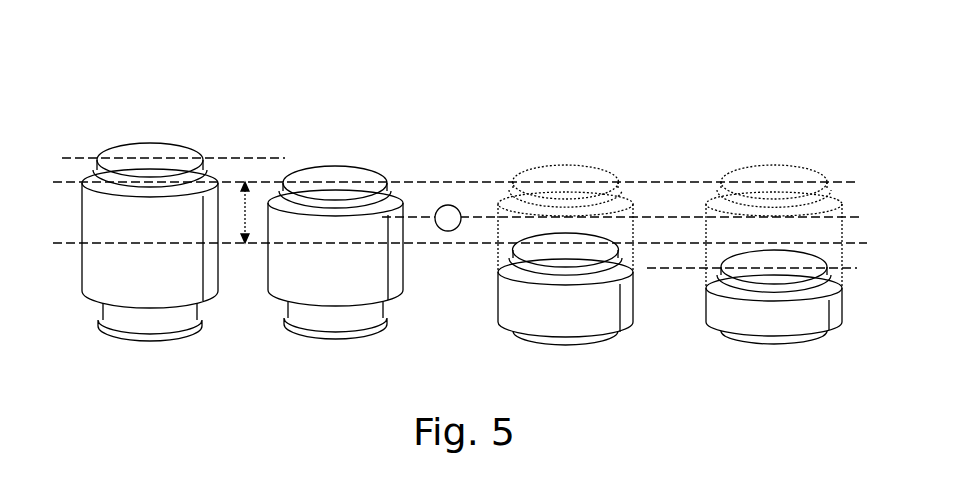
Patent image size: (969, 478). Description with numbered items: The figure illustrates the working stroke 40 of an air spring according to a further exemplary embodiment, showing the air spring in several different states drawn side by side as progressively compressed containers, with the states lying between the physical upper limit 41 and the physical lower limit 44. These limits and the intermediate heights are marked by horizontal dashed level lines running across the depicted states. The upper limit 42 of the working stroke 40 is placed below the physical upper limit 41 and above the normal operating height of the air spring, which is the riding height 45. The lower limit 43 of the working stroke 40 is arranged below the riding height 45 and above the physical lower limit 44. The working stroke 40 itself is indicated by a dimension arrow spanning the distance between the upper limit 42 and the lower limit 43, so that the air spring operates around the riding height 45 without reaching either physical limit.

The working stroke 40 is at (229, 217).
The physical upper limit 41 is at (225, 158).
The upper limit of the working stroke 42 is at (275, 186).
The lower limit of the working stroke 43 is at (463, 246).
The physical lower limit 44 is at (683, 268).
The riding height 45 is at (449, 211).